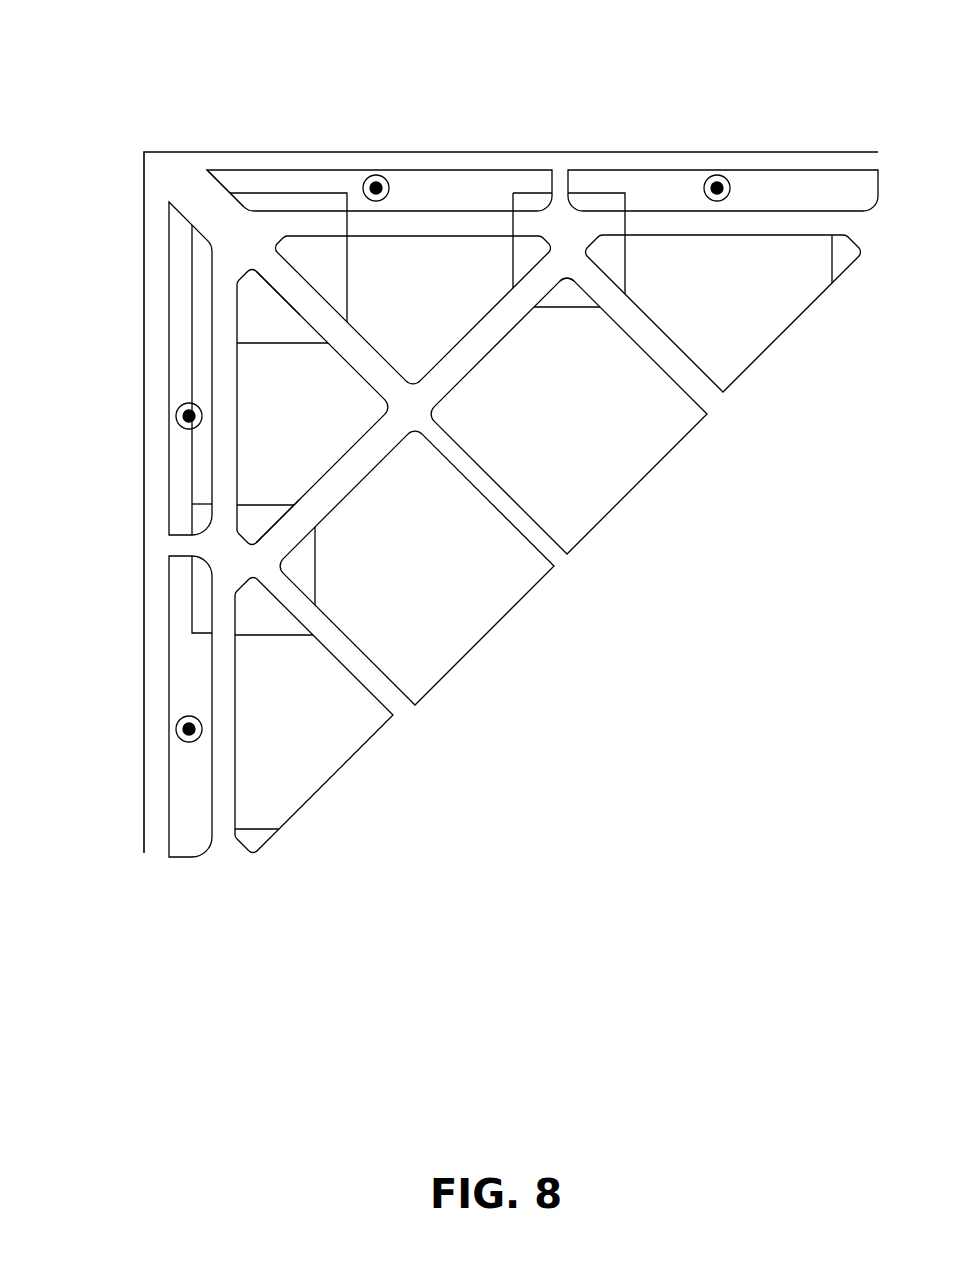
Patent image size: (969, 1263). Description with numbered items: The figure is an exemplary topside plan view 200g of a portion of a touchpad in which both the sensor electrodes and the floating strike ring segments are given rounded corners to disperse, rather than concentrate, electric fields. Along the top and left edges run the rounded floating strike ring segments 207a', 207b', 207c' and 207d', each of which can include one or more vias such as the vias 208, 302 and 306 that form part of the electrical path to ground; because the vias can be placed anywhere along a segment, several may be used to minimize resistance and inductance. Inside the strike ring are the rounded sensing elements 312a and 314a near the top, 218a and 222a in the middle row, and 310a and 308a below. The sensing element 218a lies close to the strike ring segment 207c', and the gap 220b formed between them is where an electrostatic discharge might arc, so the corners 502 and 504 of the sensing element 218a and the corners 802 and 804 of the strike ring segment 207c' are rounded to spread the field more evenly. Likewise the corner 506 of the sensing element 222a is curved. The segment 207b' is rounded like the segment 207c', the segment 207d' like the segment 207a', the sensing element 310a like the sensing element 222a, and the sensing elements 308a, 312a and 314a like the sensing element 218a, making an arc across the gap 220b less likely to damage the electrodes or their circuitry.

The topside plan view 200g is at (900, 53).
The gap 220b is at (246, 147).
The via 306 is at (378, 174).
The floating strike ring segment 207b' is at (416, 210).
The floating strike ring segment 207a' is at (723, 196).
The floating strike ring segment 207c' is at (128, 368).
The floating strike ring segment 207d' is at (128, 706).
The corner 802 is at (206, 243).
The corner 804 is at (206, 522).
The via 208 is at (165, 416).
The via 302 is at (180, 722).
The corner 502 is at (252, 277).
The corner 504 is at (255, 545).
The corner 506 is at (567, 276).
The sensing element 312a is at (436, 311).
The sensing element 314a is at (747, 311).
The sensing element 218a is at (339, 419).
The sensing element 222a is at (597, 430).
The sensing element 310a is at (444, 575).
The sensing element 308a is at (327, 731).